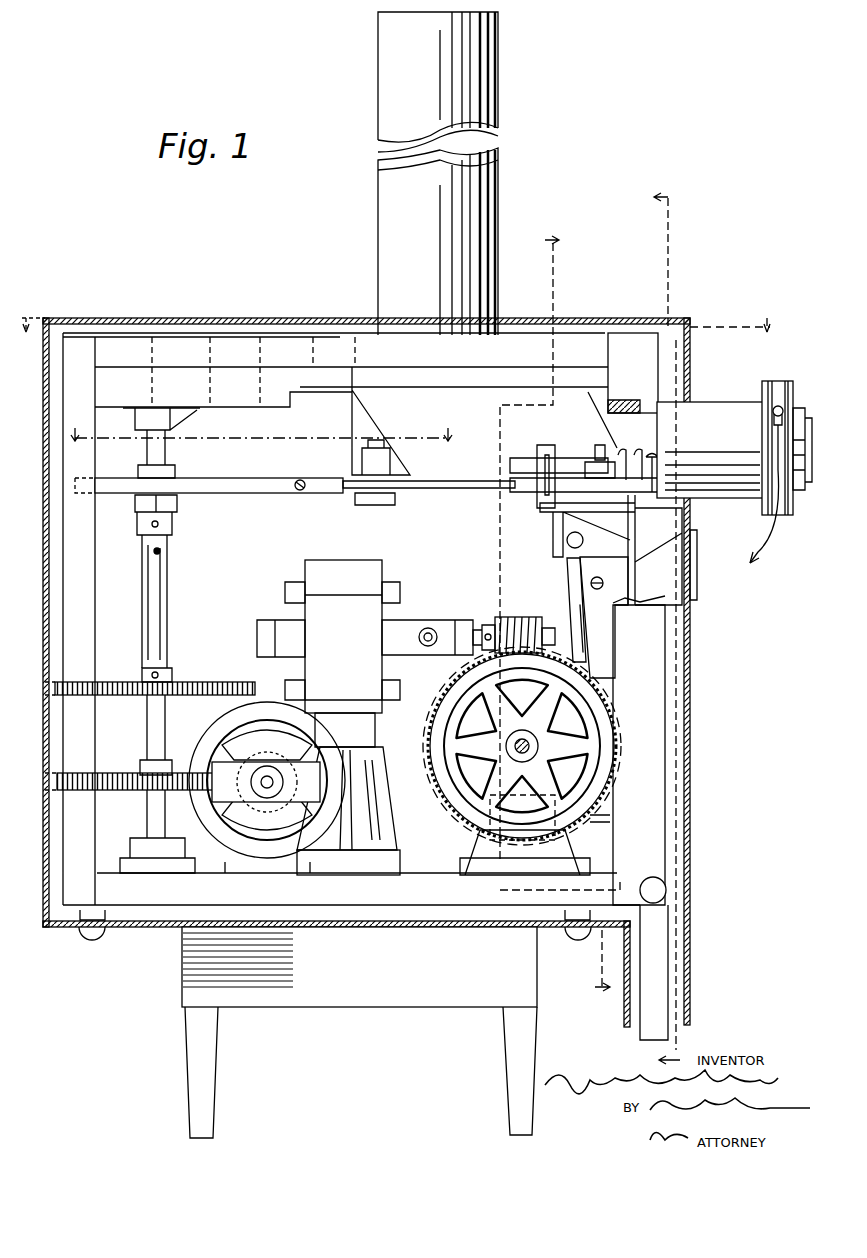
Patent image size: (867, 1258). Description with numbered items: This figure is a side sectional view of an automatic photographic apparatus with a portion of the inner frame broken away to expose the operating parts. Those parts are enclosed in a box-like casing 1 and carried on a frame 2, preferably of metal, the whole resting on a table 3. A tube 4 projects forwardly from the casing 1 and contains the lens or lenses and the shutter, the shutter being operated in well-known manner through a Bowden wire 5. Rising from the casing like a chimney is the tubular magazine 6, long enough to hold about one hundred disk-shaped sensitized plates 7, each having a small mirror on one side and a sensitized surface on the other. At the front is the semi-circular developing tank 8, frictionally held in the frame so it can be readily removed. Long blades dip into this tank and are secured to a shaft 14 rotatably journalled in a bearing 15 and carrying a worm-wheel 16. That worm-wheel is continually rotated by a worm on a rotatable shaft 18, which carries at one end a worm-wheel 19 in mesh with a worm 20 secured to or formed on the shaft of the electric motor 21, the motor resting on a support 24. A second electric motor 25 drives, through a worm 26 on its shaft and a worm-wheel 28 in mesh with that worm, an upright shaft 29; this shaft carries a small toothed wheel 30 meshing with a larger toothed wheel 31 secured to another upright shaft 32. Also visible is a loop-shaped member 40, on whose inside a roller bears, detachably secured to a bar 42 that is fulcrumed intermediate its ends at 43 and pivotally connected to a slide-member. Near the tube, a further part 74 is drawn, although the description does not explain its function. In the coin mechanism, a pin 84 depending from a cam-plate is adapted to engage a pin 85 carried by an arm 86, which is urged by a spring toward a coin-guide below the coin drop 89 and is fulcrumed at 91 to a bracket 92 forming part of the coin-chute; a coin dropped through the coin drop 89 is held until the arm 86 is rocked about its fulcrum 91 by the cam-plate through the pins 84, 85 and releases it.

The casing 1 is at (175, 320).
The frame 2 is at (553, 365).
The table 3 is at (455, 1015).
The tube 4 is at (706, 408).
The Bowden wire 5 is at (766, 492).
The magazine 6 is at (385, 232).
The sensitized plates 7 is at (581, 622).
The developing tank 8 is at (652, 1011).
The shaft 14 is at (612, 818).
The bearing 15 is at (492, 778).
The worm-wheel 16 is at (548, 780).
The rotatable shaft 18 is at (522, 730).
The worm-wheel 19 is at (428, 745).
The worm 20 is at (497, 617).
The electric motor 21 is at (338, 572).
The support 24 is at (384, 836).
The second electric motor 25 is at (226, 730).
The worm 26 is at (284, 782).
The worm-wheel 28 is at (150, 795).
The upright shaft 29 is at (163, 440).
The small toothed wheel 30 is at (172, 680).
The larger toothed wheel 31 is at (225, 681).
The upright shaft 32 is at (168, 542).
The loop-shaped member 40 is at (262, 496).
The bar 42 is at (459, 490).
The fulcrum 43 is at (392, 500).
The latch bracket 74 is at (642, 468).
The pin 84 is at (552, 527).
The pin 85 is at (585, 540).
The arm 86 is at (574, 580).
The coin drop 89 is at (698, 568).
The fulcrum 91 is at (604, 617).
The bracket 92 is at (619, 625).